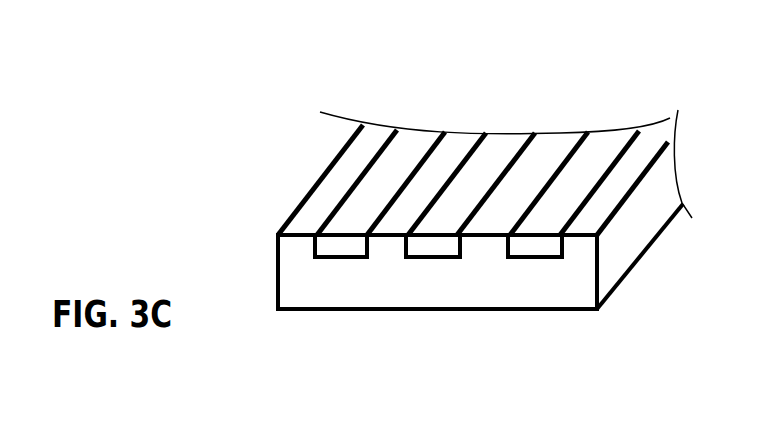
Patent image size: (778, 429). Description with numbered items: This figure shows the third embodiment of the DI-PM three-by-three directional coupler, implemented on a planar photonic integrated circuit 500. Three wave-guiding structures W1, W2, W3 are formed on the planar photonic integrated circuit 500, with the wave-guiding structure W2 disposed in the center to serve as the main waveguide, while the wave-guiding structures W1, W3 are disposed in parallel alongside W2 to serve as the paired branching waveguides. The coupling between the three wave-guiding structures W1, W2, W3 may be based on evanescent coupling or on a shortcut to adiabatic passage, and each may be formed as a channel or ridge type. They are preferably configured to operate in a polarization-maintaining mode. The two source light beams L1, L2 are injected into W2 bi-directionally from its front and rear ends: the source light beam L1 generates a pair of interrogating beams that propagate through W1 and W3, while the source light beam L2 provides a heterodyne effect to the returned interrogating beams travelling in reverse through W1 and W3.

The planar photonic integrated circuit 500 is at (558, 312).
The source light beam L1 is at (453, 208).
The source light beam L2 is at (522, 129).
The wave-guiding structure W1 is at (341, 259).
The wave-guiding structure W2 is at (435, 259).
The wave-guiding structure W3 is at (535, 259).